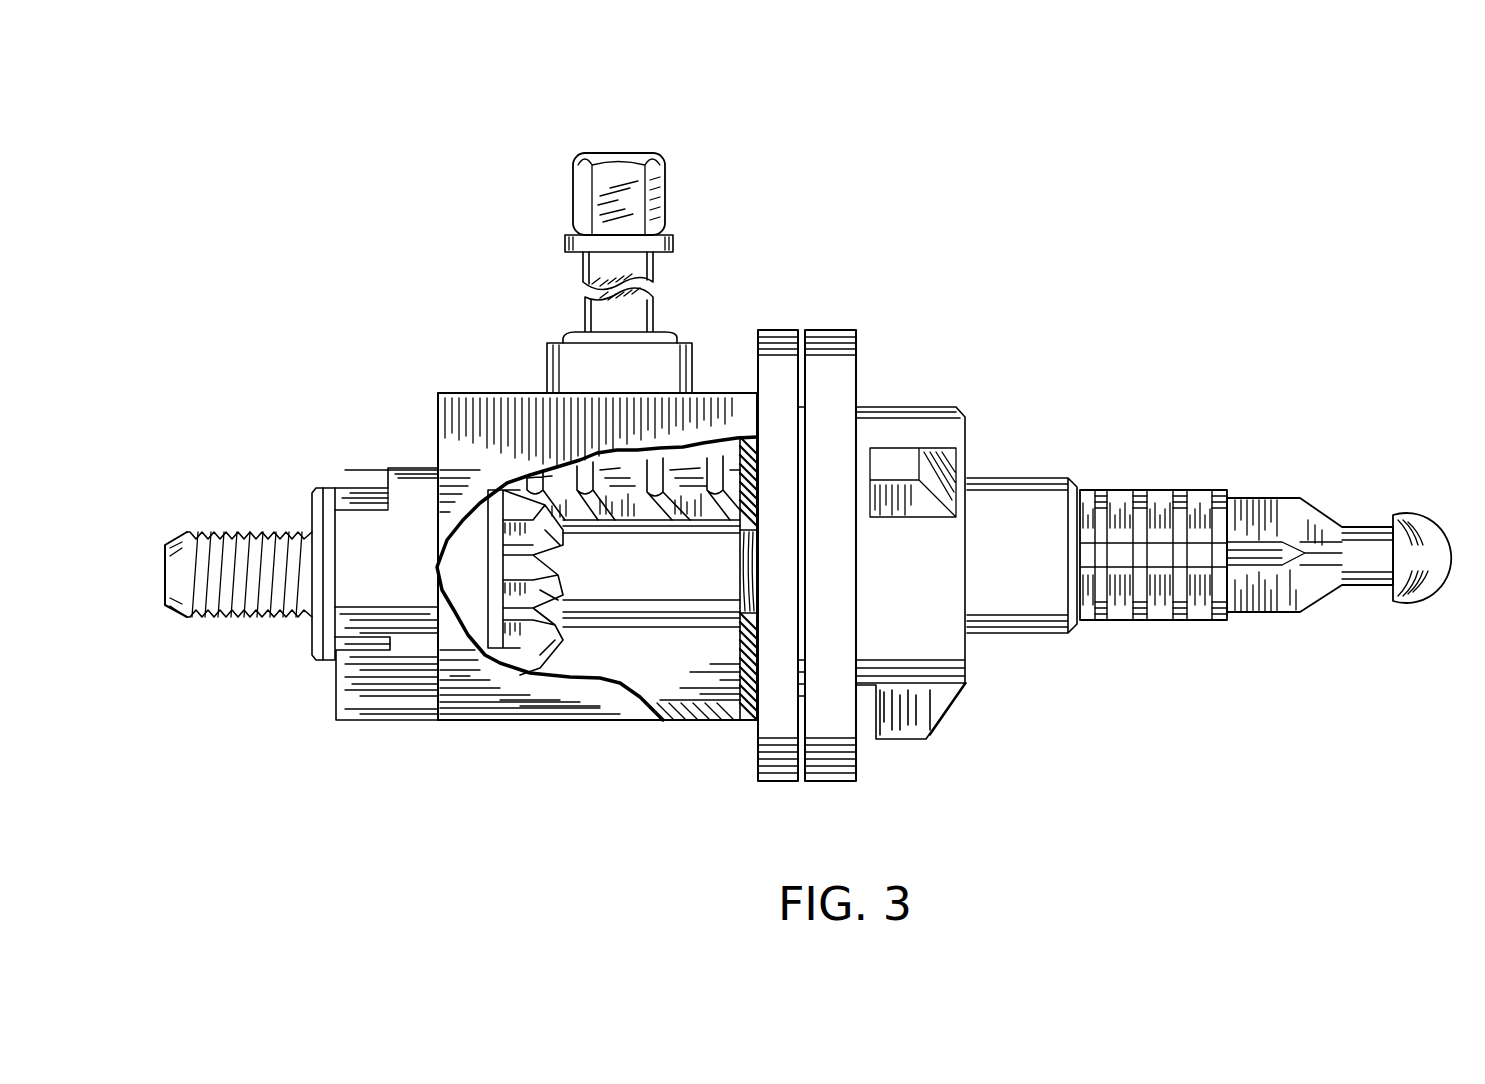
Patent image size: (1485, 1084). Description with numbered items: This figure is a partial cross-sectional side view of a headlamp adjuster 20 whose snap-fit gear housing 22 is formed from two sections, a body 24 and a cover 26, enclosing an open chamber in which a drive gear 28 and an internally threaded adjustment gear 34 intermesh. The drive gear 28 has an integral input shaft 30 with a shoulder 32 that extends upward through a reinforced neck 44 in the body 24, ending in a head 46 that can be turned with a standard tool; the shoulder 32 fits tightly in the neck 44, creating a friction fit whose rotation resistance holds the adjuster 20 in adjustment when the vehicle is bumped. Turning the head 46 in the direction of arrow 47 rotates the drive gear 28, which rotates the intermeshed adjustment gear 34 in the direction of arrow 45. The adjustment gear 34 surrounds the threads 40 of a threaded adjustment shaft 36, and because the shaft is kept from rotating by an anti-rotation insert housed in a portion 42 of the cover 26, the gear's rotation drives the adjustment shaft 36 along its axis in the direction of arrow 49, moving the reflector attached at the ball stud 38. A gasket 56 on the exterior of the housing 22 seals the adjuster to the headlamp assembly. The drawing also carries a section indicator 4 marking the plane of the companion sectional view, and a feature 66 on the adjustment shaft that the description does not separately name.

The headlamp adjuster 20 is at (406, 280).
The snap-fit gear housing 22 is at (776, 331).
The body 24 is at (513, 700).
The cover 26 is at (342, 495).
The drive gear 28 is at (720, 394).
The input shaft 30 is at (630, 268).
The shoulder 32 is at (663, 335).
The adjustment gear 34 is at (580, 600).
The adjustment shaft 36 is at (1140, 490).
The ball stud 38 is at (1442, 527).
The threads 40 is at (217, 545).
The portion of the cover 42 is at (330, 538).
The reinforced neck 44 is at (577, 368).
The arrow 45 is at (688, 552).
The head 46 is at (655, 220).
The arrow 47 is at (576, 128).
The arrow 49 is at (1382, 647).
The gasket 56 is at (838, 375).
The pin 66 is at (1282, 512).
The section line 4- 4 is at (465, 745).